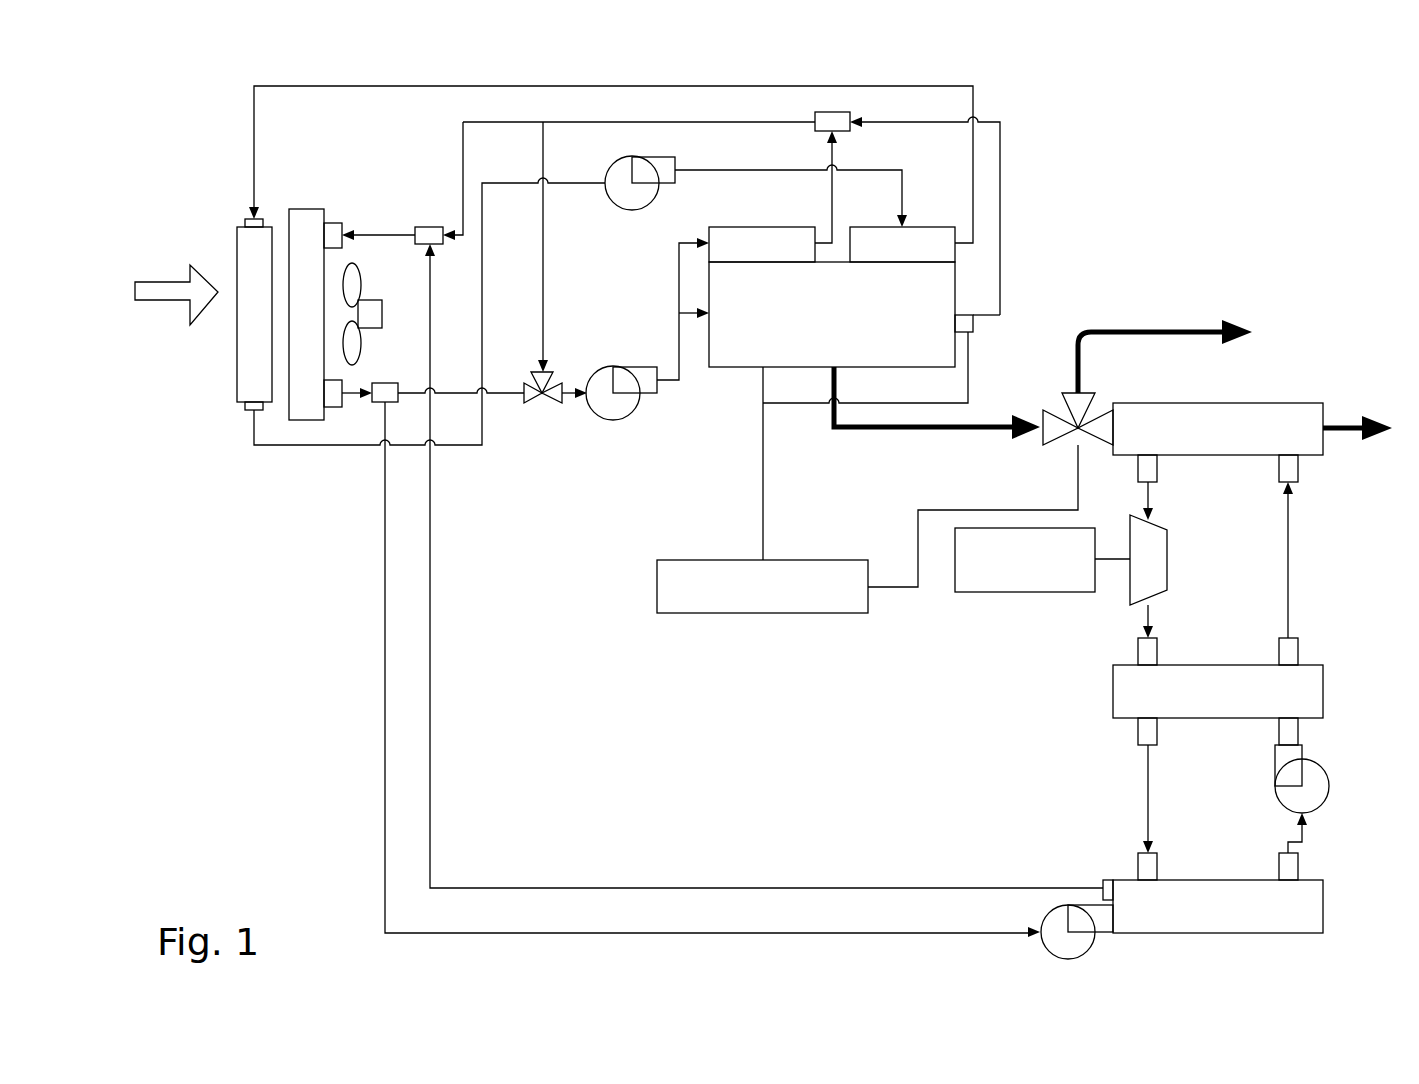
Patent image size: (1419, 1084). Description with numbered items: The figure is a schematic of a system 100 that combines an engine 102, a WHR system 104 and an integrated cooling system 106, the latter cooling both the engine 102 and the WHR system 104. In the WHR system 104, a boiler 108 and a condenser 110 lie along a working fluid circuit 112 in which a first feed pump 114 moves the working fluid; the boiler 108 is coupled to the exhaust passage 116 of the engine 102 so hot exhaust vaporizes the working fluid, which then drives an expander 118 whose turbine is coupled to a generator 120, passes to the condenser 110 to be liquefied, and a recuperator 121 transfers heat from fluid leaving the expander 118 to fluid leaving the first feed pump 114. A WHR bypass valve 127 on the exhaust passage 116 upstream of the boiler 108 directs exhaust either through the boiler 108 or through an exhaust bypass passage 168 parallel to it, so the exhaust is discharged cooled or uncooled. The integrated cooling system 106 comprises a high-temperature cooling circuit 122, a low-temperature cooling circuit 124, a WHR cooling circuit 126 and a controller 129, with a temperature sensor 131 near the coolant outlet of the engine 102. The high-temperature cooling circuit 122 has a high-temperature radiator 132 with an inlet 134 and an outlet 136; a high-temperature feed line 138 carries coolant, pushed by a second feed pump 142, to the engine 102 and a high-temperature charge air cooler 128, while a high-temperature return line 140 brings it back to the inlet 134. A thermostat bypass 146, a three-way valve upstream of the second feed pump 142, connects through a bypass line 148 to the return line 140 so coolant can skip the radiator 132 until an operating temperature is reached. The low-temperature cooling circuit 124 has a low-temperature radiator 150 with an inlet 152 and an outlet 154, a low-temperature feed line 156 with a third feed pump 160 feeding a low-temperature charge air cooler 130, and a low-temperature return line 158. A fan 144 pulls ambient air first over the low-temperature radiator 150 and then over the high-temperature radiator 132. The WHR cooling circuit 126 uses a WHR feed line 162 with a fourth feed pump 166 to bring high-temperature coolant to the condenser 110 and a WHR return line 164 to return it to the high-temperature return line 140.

The system 100 is at (1286, 176).
The engine 102 is at (832, 314).
The WHR system 104 is at (1064, 680).
The integrated cooling system 106 is at (260, 586).
The boiler 108 is at (1218, 442).
The condenser 110 is at (1213, 893).
The working fluid circuit 112 is at (1288, 542).
The first feed pump 114 is at (1330, 788).
The exhaust passage 116 is at (860, 432).
The expander 118 is at (1170, 560).
The generator 120 is at (1042, 560).
The recuperator 121 is at (1218, 691).
The high-temperature cooling circuit 122 is at (461, 445).
The low-temperature cooling circuit 124 is at (422, 348).
The WHR cooling circuit 126 is at (670, 669).
The WHR bypass valve 127 is at (1062, 405).
The high-temperature charge air cooler 128 is at (772, 227).
The controller 129 is at (867, 490).
The low-temperature charge air cooler 130 is at (937, 227).
The temperature sensor 131 is at (978, 328).
The high-temperature radiator 132 is at (303, 208).
The inlet 134 is at (332, 223).
The outlet 136 is at (347, 387).
The high-temperature feed line 138 is at (510, 397).
The high-temperature return line 140 is at (378, 235).
The second feed pump 142 is at (613, 420).
The fan 144 is at (382, 313).
The thermostat bypass 146 is at (535, 413).
The bypass line 148 is at (543, 272).
The low-temperature radiator 150 is at (237, 380).
The inlet 152 is at (245, 217).
The outlet 154 is at (245, 408).
The low-temperature feed line 156 is at (285, 447).
The low-temperature return line 158 is at (608, 86).
The third feed pump 160 is at (623, 157).
The WHR feed line 162 is at (385, 742).
The WHR return line 164 is at (430, 678).
The fourth feed pump 166 is at (1053, 907).
The exhaust bypass passage 168 is at (1112, 336).